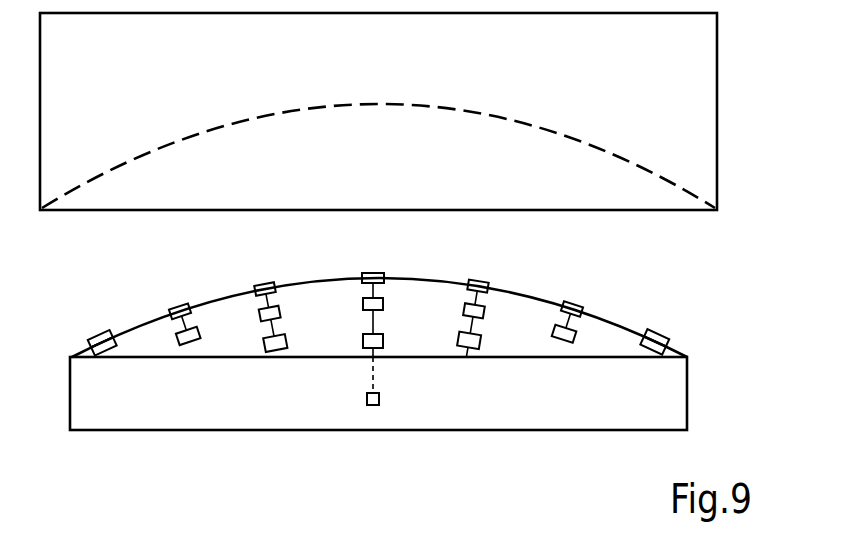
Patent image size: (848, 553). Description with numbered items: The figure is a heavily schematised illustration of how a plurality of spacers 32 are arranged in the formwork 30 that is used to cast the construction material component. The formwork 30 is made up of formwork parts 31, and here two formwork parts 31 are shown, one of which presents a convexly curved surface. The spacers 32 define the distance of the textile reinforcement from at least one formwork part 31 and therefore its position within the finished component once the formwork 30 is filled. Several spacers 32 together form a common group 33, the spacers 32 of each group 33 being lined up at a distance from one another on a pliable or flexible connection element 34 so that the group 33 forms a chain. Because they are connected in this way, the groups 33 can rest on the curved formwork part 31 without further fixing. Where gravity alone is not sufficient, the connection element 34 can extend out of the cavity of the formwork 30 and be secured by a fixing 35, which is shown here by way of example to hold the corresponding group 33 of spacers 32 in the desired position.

The formwork 30 is at (712, 246).
The formwork part 31 is at (695, 113).
The spacer 32 is at (362, 303).
The group 33 is at (95, 330).
The connection element 34 is at (375, 325).
The fixing 35 is at (373, 406).